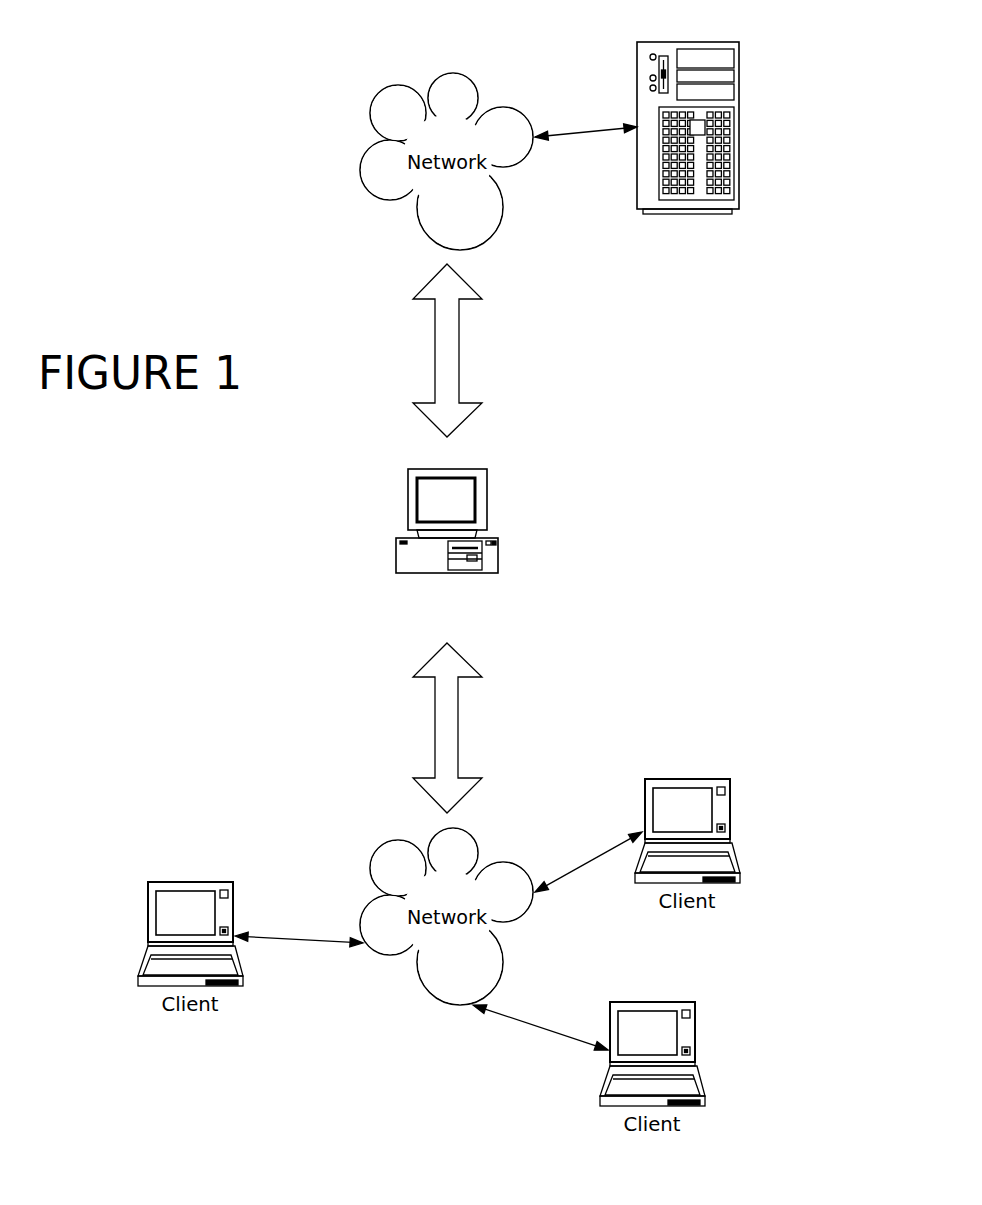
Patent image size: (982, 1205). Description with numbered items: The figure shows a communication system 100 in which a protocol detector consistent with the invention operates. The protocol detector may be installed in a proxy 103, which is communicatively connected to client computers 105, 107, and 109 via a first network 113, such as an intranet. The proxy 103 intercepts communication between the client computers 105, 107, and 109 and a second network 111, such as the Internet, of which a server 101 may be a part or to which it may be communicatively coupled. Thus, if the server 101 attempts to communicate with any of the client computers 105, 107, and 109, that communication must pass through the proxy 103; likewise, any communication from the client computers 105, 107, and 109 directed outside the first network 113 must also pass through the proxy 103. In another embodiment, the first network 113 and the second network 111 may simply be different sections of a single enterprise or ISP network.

The communication system 100 is at (655, 446).
The server 101 is at (688, 42).
The proxy 103 is at (396, 537).
The client computer 105 is at (192, 867).
The client computer 107 is at (687, 779).
The client computer 109 is at (655, 1002).
The second network 111 is at (355, 178).
The first network 113 is at (385, 848).